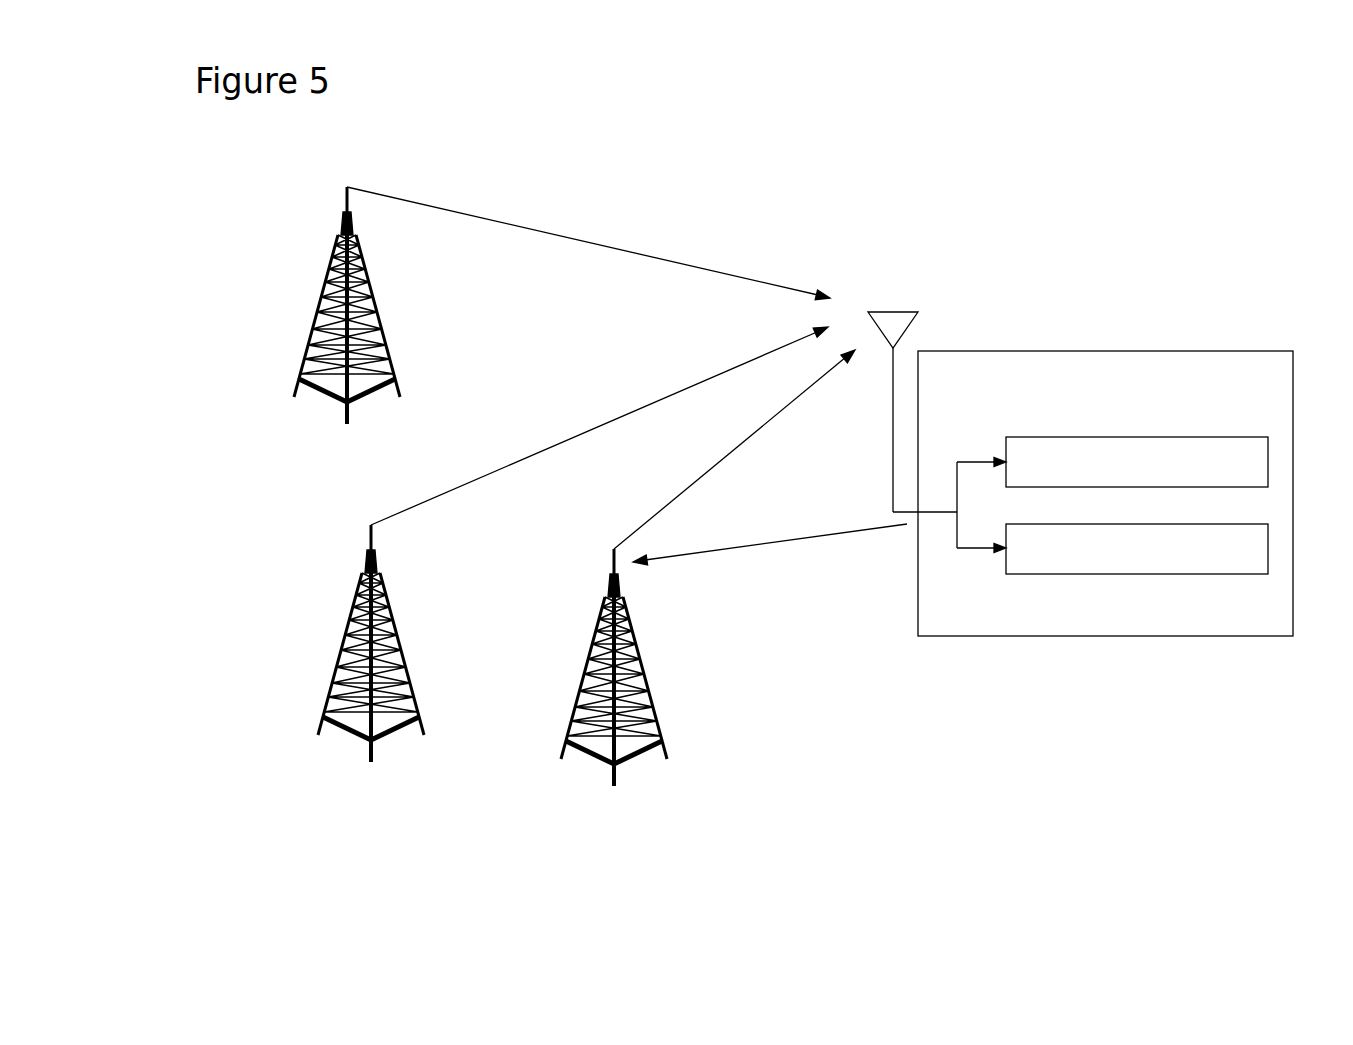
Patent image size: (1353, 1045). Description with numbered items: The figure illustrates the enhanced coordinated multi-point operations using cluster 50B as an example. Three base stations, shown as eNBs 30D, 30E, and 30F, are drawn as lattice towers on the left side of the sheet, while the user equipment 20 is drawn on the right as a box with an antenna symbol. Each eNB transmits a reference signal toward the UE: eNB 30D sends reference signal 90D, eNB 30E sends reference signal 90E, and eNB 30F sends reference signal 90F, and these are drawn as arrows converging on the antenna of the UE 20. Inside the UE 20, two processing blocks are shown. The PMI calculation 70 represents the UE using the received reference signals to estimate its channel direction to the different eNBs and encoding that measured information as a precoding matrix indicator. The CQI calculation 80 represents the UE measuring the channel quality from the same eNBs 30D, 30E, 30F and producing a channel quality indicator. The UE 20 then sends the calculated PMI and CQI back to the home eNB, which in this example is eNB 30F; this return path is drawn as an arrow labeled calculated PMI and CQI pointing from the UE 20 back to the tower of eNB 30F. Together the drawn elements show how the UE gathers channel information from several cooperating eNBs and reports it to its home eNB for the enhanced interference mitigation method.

The cluster 50B is at (746, 168).
The eNB 30D is at (348, 443).
The eNB 30E is at (375, 804).
The eNB 30F is at (615, 817).
The reference signal 90D is at (588, 243).
The reference signal 90E is at (599, 426).
The reference signal 90F is at (731, 449).
The UE 20 is at (1080, 474).
The PMI calculation 70 is at (1137, 462).
The CQI calculation 80 is at (1137, 549).